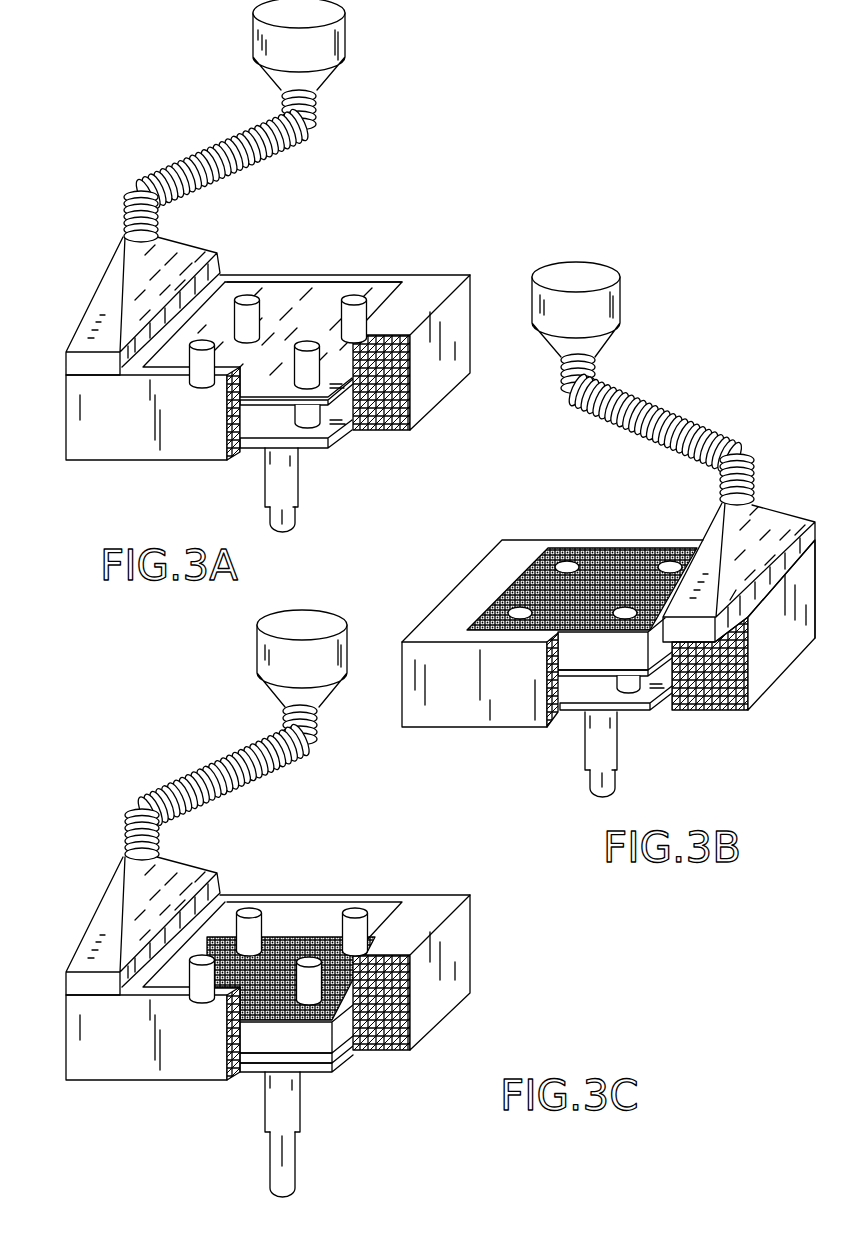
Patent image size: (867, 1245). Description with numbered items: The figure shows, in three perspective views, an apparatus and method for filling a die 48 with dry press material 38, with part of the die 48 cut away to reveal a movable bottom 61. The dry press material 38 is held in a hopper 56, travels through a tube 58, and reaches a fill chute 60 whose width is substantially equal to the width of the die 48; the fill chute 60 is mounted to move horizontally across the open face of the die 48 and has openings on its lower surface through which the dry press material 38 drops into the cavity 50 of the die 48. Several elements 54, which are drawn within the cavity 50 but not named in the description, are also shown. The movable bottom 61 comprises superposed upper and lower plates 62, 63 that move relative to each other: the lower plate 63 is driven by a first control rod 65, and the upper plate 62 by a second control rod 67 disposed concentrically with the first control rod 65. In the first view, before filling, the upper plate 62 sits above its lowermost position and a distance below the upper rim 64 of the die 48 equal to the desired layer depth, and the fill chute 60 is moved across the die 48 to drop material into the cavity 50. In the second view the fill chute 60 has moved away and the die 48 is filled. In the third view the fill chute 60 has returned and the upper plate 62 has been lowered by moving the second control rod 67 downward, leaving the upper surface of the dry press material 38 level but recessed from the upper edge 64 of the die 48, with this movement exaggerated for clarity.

In FIG. 3B, the dry press material 38 is at (620, 555).
In FIG. 3C, the dry press material 38 is at (255, 1047).
In FIG. 3A, the die 48 is at (425, 373).
In FIG. 3B, the die 48 is at (759, 679).
In FIG. 3C, the die 48 is at (314, 987).
In FIG. 3A, the cavity 50 is at (323, 297).
In FIG. 3B, the cavity 50 is at (690, 550).
In FIG. 3C, the cavity 50 is at (295, 910).
In FIG. 3A, the pins 54 is at (308, 346).
In FIG. 3B, the pins 54 is at (626, 610).
In FIG. 3C, the pins 54 is at (309, 960).
In FIG. 3A, the hopper 56 is at (322, 42).
In FIG. 3B, the hopper 56 is at (620, 288).
In FIG. 3C, the hopper 56 is at (262, 655).
In FIG. 3A, the tube 58 is at (313, 107).
In FIG. 3B, the tube 58 is at (595, 362).
In FIG. 3C, the tube 58 is at (283, 713).
In FIG. 3A, the fill chute 60 is at (222, 300).
In FIG. 3B, the fill chute 60 is at (790, 513).
In FIG. 3C, the fill chute 60 is at (217, 897).
In FIG. 3A, the movable bottom 61 is at (281, 416).
In FIG. 3B, the movable bottom 61 is at (604, 680).
In FIG. 3C, the movable bottom 61 is at (252, 1088).
In FIG. 3A, the upper plate 62 is at (314, 412).
In FIG. 3B, the upper plate 62 is at (634, 676).
In FIG. 3C, the upper plate 62 is at (317, 1060).
In FIG. 3A, the lower plate 63 is at (305, 443).
In FIG. 3B, the lower plate 63 is at (627, 710).
In FIG. 3C, the lower plate 63 is at (307, 1068).
In FIG. 3A, the upper edge 64 is at (464, 290).
In FIG. 3B, the upper edge 64 is at (538, 547).
In FIG. 3C, the upper edge 64 is at (306, 926).
In FIG. 3A, the first control rod 65 is at (283, 503).
In FIG. 3B, the first control rod 65 is at (603, 768).
In FIG. 3C, the first control rod 65 is at (291, 1128).
In FIG. 3A, the second control rod 67 is at (263, 525).
In FIG. 3B, the second control rod 67 is at (593, 792).
In FIG. 3C, the second control rod 67 is at (277, 1160).